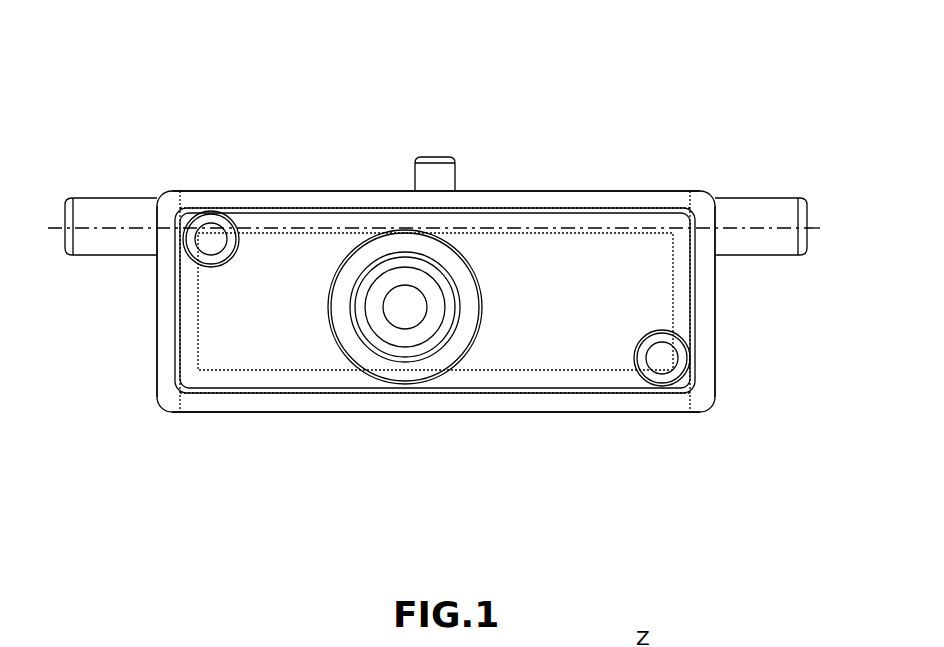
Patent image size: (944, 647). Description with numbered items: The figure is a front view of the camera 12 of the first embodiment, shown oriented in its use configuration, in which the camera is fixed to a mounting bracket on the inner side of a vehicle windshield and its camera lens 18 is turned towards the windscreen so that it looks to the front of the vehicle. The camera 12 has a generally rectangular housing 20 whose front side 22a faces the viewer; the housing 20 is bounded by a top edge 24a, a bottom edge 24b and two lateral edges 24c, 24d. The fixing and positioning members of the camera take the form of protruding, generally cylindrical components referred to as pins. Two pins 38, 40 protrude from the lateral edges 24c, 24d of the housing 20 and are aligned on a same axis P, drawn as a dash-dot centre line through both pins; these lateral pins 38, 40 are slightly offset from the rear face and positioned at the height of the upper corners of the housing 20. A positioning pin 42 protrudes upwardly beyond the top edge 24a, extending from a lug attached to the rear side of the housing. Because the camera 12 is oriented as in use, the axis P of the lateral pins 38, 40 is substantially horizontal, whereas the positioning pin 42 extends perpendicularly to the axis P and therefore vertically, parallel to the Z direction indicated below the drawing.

The camera 12 is at (238, 128).
The camera lens 18 is at (435, 365).
The housing 20 is at (620, 197).
The front side 22a is at (658, 302).
The top edge 24a is at (352, 195).
The bottom edge 24b is at (272, 412).
The lateral edge 24c is at (157, 275).
The lateral edge 24d is at (710, 367).
The pin 38 is at (108, 198).
The pin 40 is at (768, 208).
The positioning pin 42 is at (447, 178).
The axis P is at (820, 227).